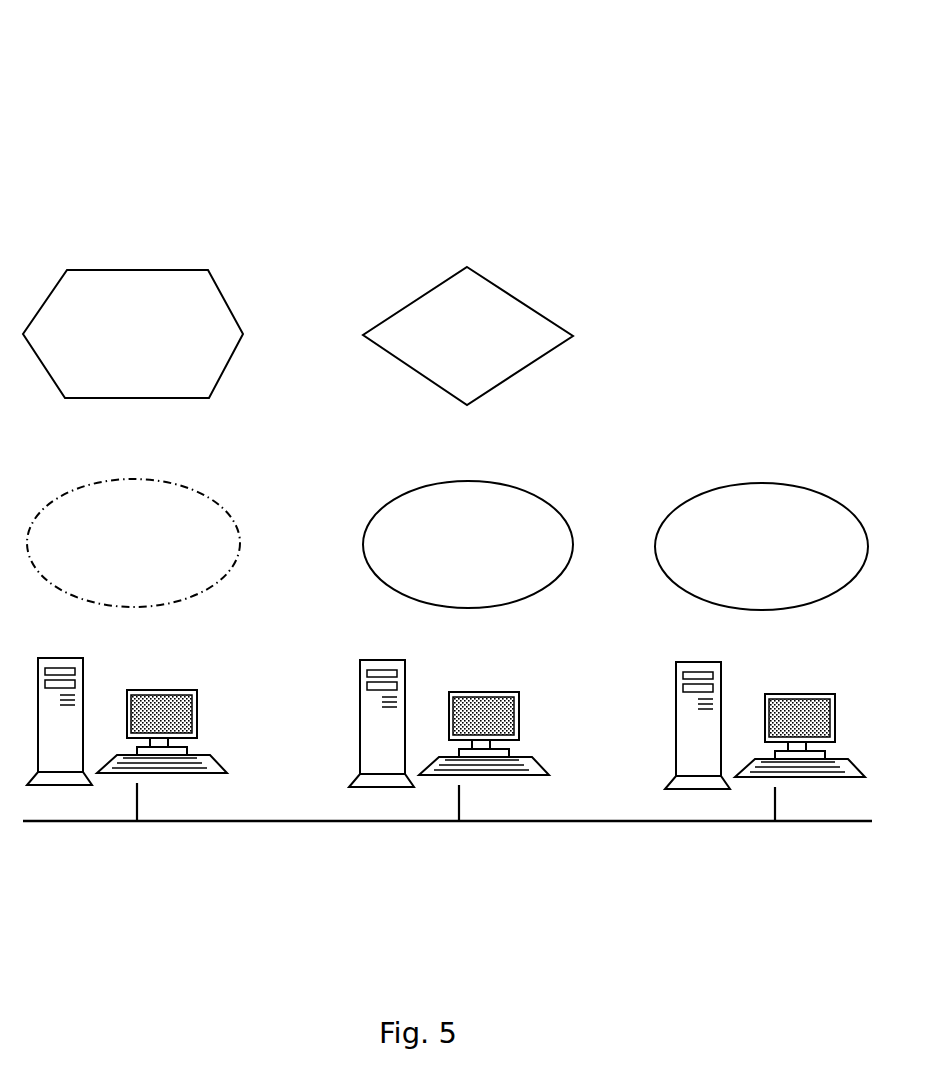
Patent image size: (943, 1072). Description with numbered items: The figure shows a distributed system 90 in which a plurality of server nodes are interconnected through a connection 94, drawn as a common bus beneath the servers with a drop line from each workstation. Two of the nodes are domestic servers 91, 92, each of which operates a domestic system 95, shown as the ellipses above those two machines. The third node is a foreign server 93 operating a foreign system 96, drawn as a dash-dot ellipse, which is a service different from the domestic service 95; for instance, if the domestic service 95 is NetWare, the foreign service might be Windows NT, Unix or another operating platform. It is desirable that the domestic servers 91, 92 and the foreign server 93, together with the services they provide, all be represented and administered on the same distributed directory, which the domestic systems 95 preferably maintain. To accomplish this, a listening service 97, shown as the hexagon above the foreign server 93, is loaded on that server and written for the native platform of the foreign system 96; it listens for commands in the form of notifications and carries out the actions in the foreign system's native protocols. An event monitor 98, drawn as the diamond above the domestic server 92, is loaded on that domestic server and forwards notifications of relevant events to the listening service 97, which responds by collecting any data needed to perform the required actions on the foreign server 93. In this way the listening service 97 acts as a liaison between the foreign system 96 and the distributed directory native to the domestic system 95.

The network system 90 is at (193, 88).
The domestic server 91 is at (840, 718).
The domestic server 92 is at (522, 716).
The foreign server 93 is at (200, 717).
The connection 94 is at (313, 821).
The domestic system 95 is at (615, 545).
The foreign system 96 is at (133, 543).
The listening service 97 is at (133, 334).
The event monitor 98 is at (468, 336).